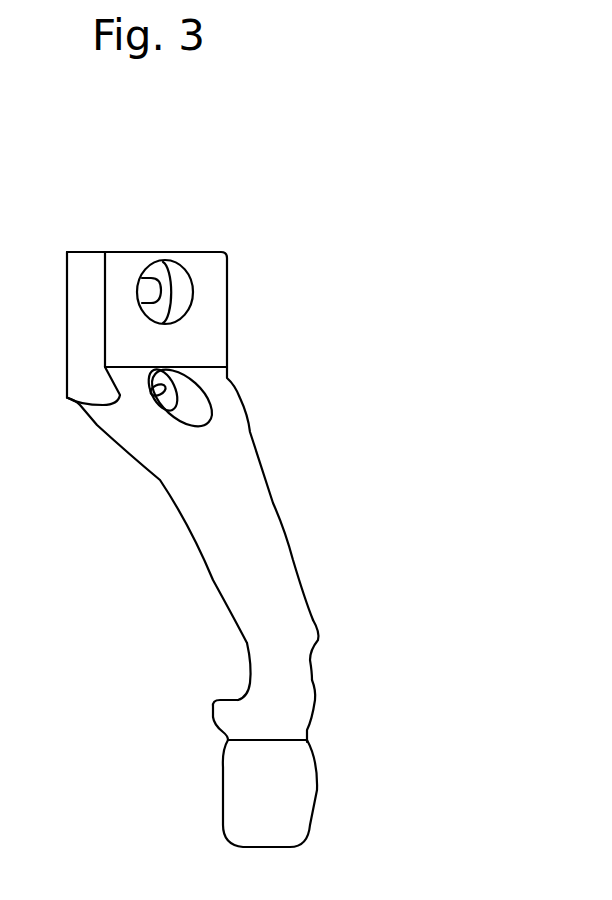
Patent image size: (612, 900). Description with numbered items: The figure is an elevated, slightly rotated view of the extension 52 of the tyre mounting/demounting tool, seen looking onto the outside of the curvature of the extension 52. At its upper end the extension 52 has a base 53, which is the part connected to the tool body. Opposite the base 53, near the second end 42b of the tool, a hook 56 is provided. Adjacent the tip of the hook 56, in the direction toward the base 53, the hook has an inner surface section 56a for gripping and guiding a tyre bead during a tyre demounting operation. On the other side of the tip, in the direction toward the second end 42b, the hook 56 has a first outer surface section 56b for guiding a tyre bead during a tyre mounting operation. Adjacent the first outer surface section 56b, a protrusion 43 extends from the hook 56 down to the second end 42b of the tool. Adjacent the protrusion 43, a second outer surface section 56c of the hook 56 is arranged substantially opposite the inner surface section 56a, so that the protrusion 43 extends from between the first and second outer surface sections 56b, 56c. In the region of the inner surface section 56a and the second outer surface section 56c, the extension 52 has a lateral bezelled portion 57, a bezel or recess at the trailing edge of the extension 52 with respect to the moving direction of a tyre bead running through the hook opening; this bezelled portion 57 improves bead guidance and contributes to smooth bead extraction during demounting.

The base 53 is at (217, 308).
The extension 52 is at (257, 510).
The lateral bezelled portion 57 is at (310, 656).
The hook 56 is at (213, 703).
The inner surface section 56a is at (230, 680).
The first outer surface section 56b is at (213, 737).
The second outer surface section 56c is at (297, 703).
The protrusion 43 is at (301, 793).
The second end 42b is at (278, 848).